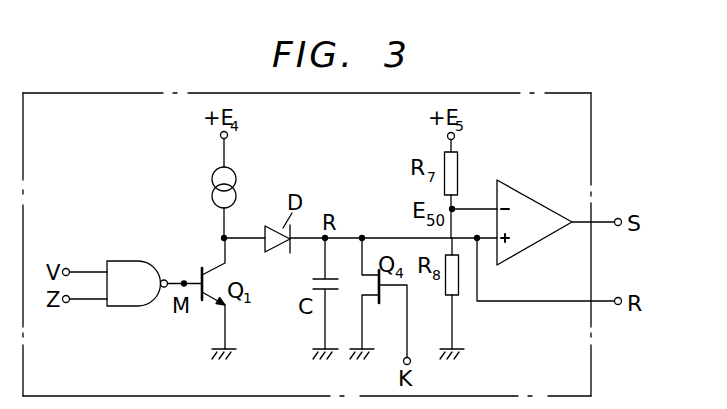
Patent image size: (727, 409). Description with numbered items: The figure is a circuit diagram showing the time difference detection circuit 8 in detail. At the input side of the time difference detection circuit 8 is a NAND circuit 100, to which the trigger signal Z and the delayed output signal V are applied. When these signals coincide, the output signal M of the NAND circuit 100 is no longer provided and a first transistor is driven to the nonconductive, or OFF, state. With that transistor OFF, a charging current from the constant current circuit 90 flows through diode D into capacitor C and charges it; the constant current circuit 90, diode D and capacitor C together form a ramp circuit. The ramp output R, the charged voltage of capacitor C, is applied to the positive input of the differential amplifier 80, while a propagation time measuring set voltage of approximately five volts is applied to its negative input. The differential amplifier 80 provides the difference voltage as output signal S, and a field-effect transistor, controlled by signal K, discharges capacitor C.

The time difference detection circuit 8 is at (583, 132).
The NAND circuit 100 is at (142, 267).
The constant current circuit 90 is at (234, 176).
The differential amplifier 80 is at (541, 204).